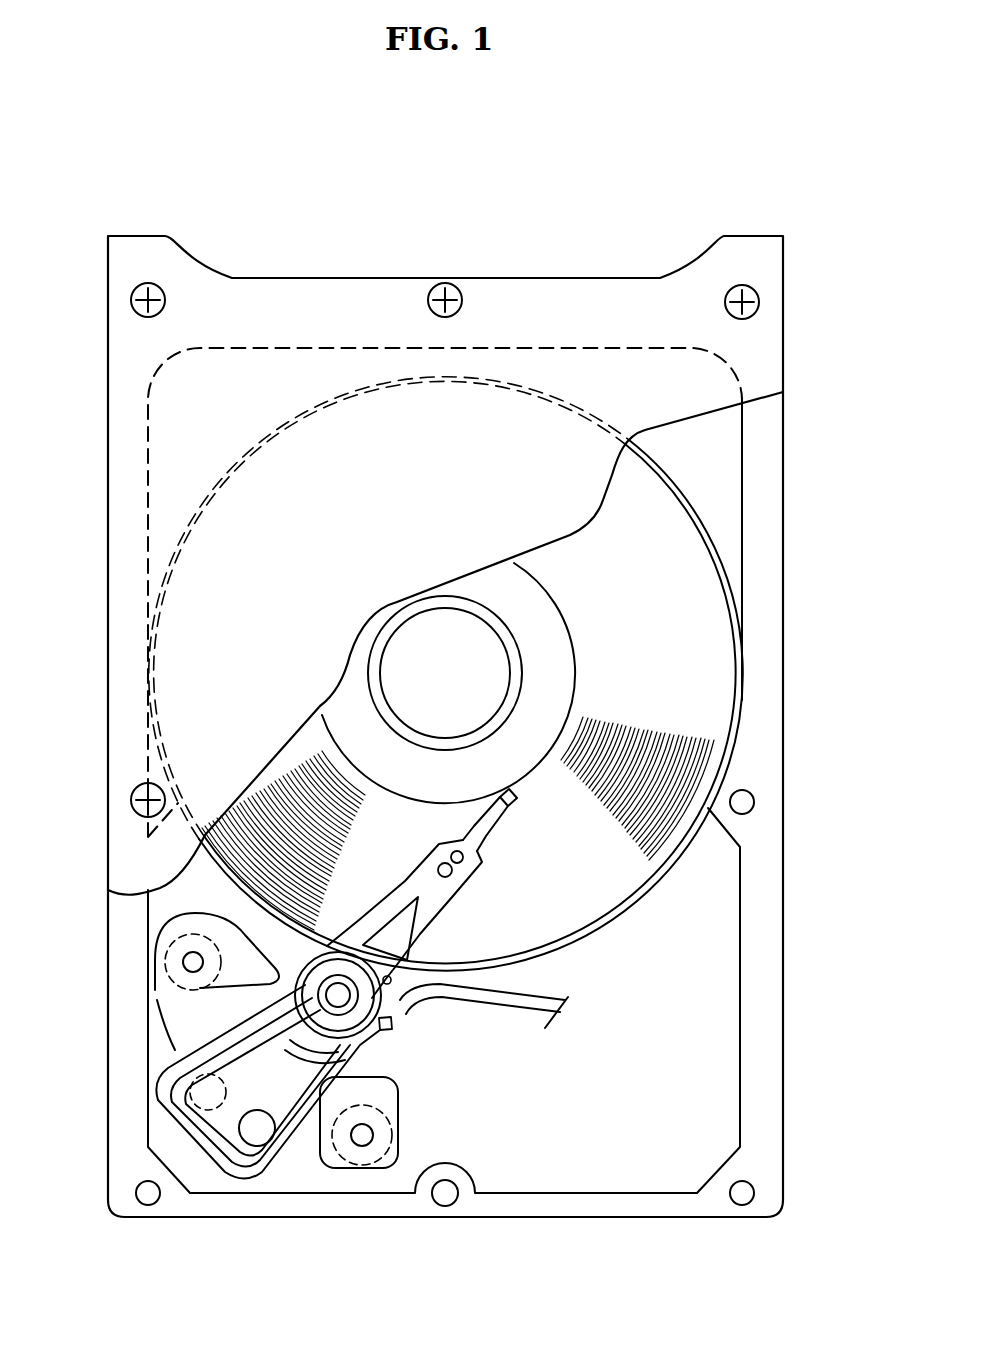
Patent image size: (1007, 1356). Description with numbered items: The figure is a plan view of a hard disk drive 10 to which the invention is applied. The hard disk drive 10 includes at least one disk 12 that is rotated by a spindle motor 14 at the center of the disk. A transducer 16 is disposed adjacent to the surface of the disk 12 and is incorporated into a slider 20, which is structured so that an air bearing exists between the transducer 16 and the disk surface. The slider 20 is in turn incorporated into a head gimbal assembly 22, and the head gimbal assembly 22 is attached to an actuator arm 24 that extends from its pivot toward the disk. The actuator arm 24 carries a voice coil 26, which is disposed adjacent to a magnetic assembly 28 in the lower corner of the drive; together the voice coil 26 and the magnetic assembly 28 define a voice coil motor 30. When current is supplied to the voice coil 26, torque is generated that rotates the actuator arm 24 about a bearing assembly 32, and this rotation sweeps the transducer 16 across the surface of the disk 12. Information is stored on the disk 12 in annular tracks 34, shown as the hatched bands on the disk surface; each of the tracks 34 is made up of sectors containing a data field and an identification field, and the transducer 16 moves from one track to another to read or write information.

The hard disk drive 10 is at (580, 197).
The disk 12 is at (698, 609).
The spindle motor 14 is at (420, 650).
The transducer 16 is at (512, 800).
The slider 20 is at (495, 815).
The head gimbal assembly 22 is at (444, 913).
The actuator arm 24 is at (250, 1013).
The voice coil 26 is at (183, 1080).
The magnetic assembly 28 is at (193, 1027).
The voice coil motor 30 is at (308, 1150).
The bearing assembly 32 is at (352, 1008).
The annular tracks 34 is at (303, 795).